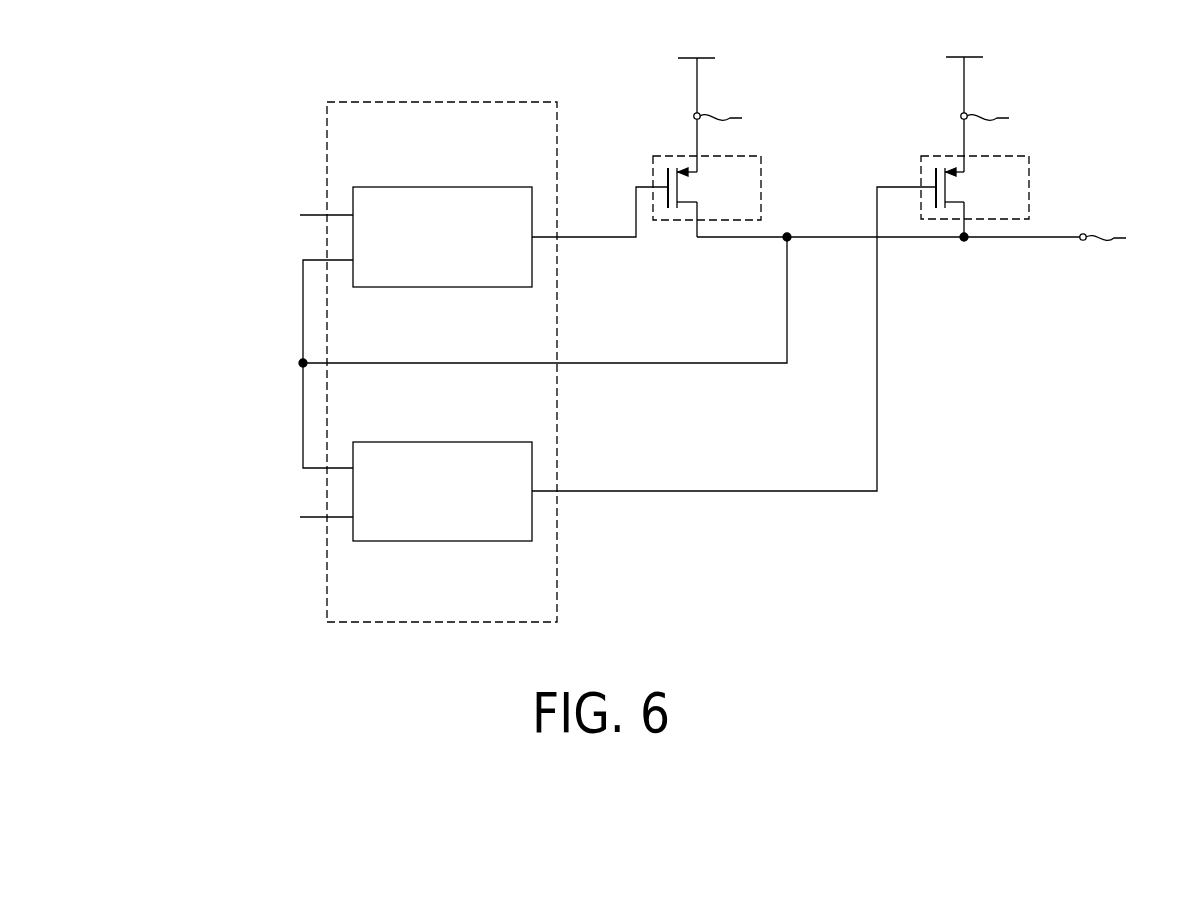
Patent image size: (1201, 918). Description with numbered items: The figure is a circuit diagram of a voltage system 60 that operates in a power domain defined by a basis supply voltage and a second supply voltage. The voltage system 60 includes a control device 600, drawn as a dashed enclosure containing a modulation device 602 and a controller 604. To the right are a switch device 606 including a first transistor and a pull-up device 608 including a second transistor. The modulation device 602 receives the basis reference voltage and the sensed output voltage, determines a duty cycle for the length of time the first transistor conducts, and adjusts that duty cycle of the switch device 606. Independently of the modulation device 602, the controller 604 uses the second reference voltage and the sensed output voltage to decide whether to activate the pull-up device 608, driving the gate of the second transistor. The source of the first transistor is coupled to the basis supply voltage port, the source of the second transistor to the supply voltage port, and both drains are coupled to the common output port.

The voltage system 60 is at (177, 100).
The control device 600 is at (443, 101).
The modulation device 602 is at (443, 187).
The controller 604 is at (440, 541).
The switch device 606 is at (653, 168).
The pull-up device 608 is at (921, 167).